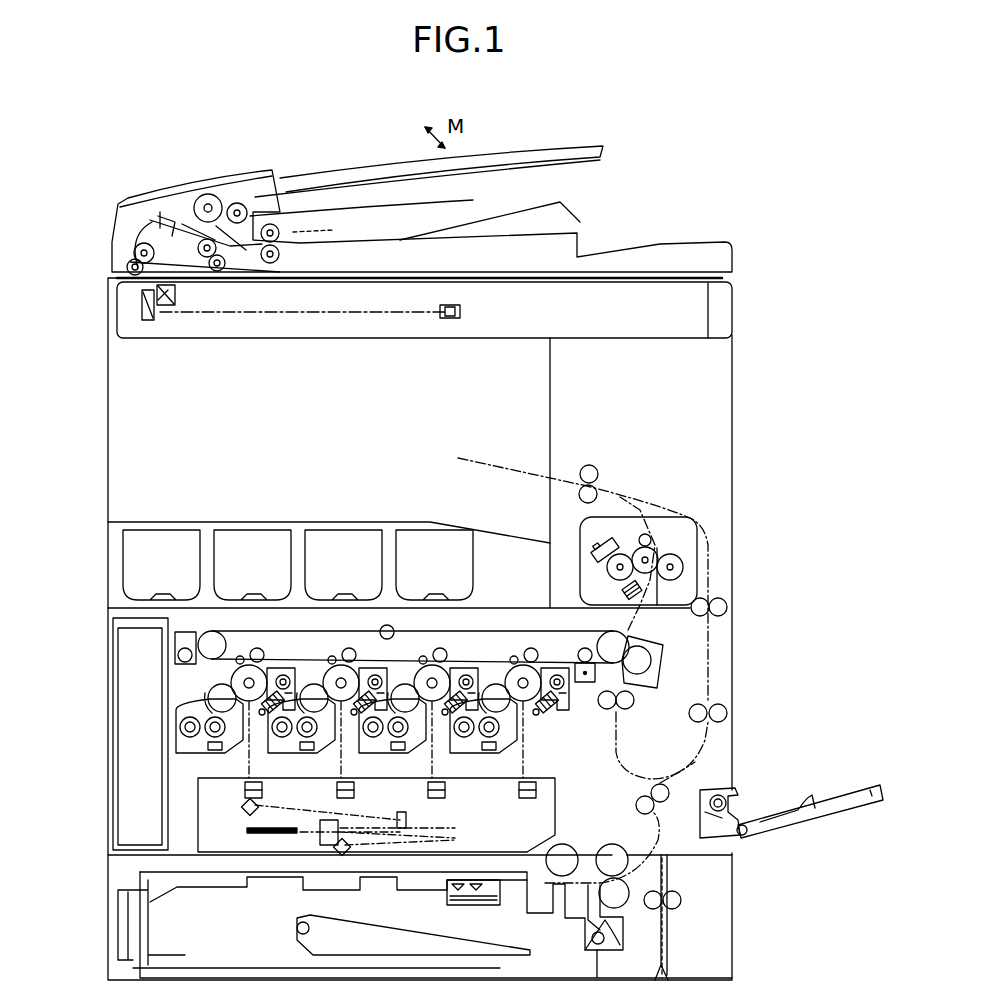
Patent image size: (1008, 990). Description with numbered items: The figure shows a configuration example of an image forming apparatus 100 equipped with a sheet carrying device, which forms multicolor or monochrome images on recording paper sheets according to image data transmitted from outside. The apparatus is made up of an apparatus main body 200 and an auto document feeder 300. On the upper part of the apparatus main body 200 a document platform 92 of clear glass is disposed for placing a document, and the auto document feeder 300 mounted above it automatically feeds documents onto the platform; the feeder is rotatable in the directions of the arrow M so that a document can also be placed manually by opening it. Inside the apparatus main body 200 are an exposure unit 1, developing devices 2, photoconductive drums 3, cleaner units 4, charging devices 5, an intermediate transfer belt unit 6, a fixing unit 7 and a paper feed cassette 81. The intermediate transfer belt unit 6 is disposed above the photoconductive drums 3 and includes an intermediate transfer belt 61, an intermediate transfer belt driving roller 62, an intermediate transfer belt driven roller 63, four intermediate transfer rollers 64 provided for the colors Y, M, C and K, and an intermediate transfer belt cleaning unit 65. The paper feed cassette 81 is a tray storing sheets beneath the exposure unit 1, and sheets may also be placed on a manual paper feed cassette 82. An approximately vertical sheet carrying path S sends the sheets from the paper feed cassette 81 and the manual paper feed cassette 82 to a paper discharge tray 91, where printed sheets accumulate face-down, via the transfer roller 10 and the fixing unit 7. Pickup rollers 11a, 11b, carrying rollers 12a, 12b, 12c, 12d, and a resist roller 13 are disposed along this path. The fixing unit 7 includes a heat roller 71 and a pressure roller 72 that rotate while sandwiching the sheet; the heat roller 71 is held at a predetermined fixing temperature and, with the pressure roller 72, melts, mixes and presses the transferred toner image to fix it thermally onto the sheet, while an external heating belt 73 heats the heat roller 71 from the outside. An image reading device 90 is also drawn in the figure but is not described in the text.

The image forming apparatus 100 is at (722, 207).
The auto document feeder 300 is at (223, 168).
The apparatus main body 200 is at (100, 495).
The image reading device 90 is at (455, 271).
The document platform 92 is at (505, 278).
The paper discharge tray 91 is at (322, 522).
The exposure unit 1 is at (560, 800).
The developing device 2 is at (213, 695).
The photoconductive drum 3 is at (248, 665).
The cleaner unit 4 is at (286, 675).
The charging device 5 is at (260, 712).
The intermediate transfer belt unit 6 is at (426, 610).
The intermediate transfer belt 61 is at (525, 628).
The intermediate transfer belt driving roller 62 is at (615, 640).
The intermediate transfer belt driven roller 63 is at (216, 634).
The intermediate transfer roller 64 is at (262, 652).
The intermediate transfer belt cleaning unit 65 is at (186, 632).
The fixing unit 7 is at (679, 534).
The heat roller 71 is at (658, 554).
The pressure roller 72 is at (678, 567).
The external heating belt 73 is at (632, 545).
The transfer roller 10 is at (645, 660).
The resist roller 13 is at (632, 702).
The carrying roller 12a is at (670, 792).
The carrying roller 12b is at (590, 465).
The carrying roller 12c is at (722, 607).
The carrying roller 12d is at (722, 713).
The pickup roller 11a is at (565, 855).
The pickup roller 11b is at (733, 803).
The paper feed cassette 81 is at (360, 933).
The manual paper feed cassette 82 is at (828, 792).
The sheet carrying path S is at (612, 757).